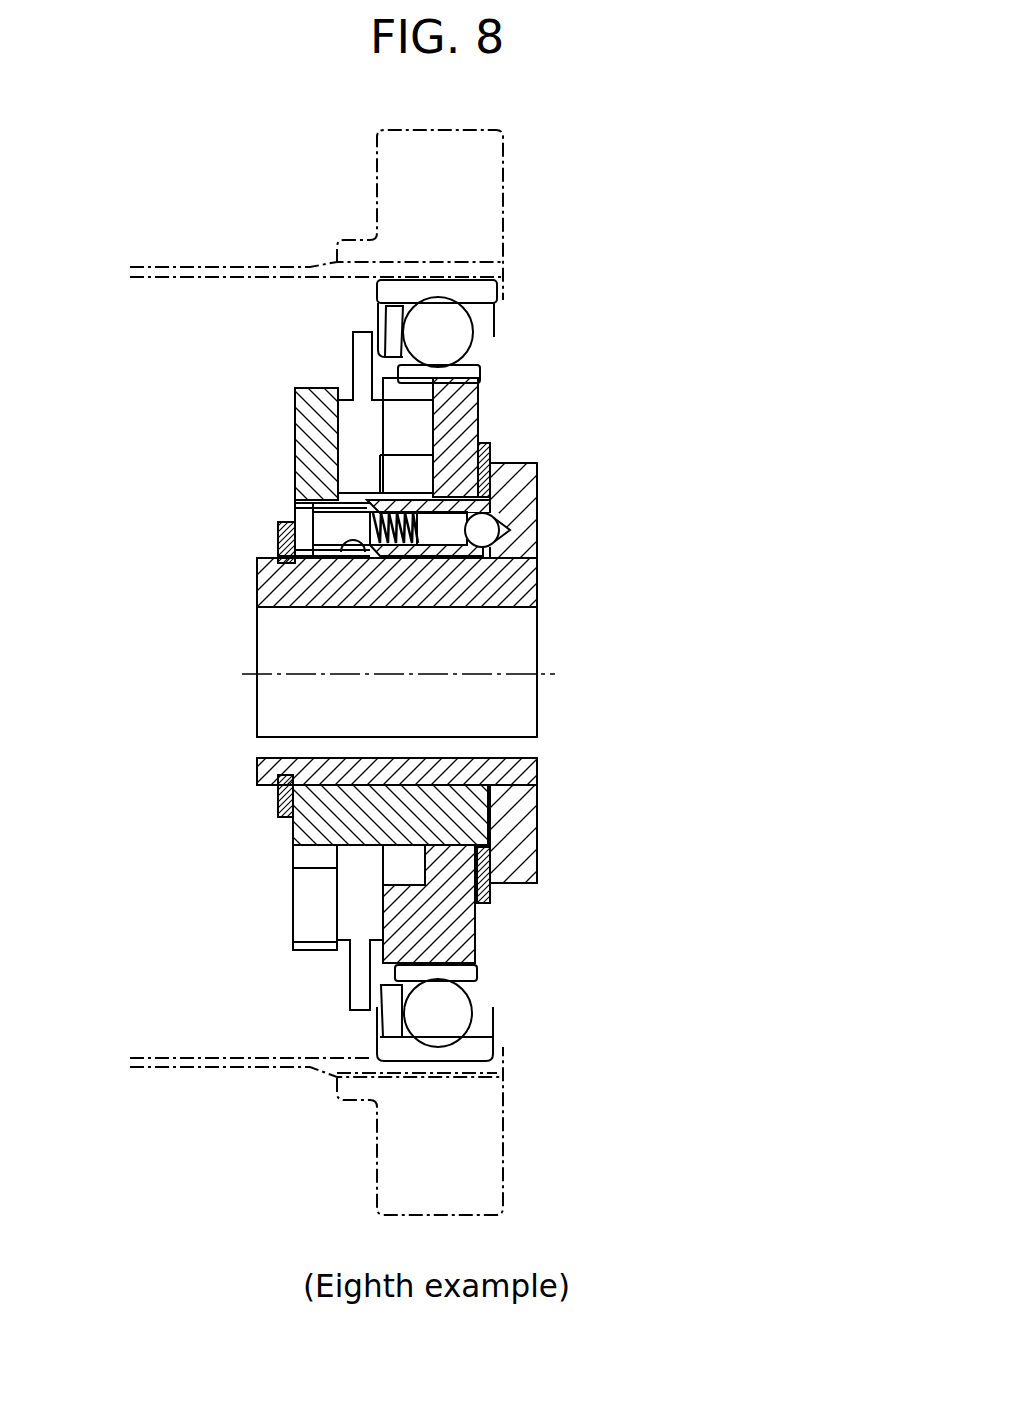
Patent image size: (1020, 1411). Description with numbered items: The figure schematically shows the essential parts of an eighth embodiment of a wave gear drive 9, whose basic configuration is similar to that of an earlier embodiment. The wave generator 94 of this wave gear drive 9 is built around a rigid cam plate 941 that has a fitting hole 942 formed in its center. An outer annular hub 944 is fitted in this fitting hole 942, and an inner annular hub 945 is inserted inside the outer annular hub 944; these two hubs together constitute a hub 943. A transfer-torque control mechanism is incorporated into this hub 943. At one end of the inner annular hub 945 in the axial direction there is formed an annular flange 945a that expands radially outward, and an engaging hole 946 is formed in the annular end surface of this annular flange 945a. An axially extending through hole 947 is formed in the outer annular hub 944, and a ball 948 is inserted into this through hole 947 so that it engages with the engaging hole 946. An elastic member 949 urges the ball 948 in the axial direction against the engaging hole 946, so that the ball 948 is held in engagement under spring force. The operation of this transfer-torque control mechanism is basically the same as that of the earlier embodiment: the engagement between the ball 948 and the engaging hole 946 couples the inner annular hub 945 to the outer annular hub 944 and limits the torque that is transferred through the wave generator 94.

The wave gear drive 9 is at (622, 314).
The wave generator 94 is at (584, 716).
The rigid cam plate 941 is at (443, 937).
The fitting hole 942 is at (453, 845).
The hub 943 is at (585, 630).
The outer annular hub 944 is at (447, 505).
The inner annular hub 945 is at (594, 673).
The annular flange 945a is at (510, 847).
The engaging hole 946 is at (497, 513).
The through hole 947 is at (367, 548).
The ball 948 is at (477, 548).
The elastic member 949 is at (397, 557).